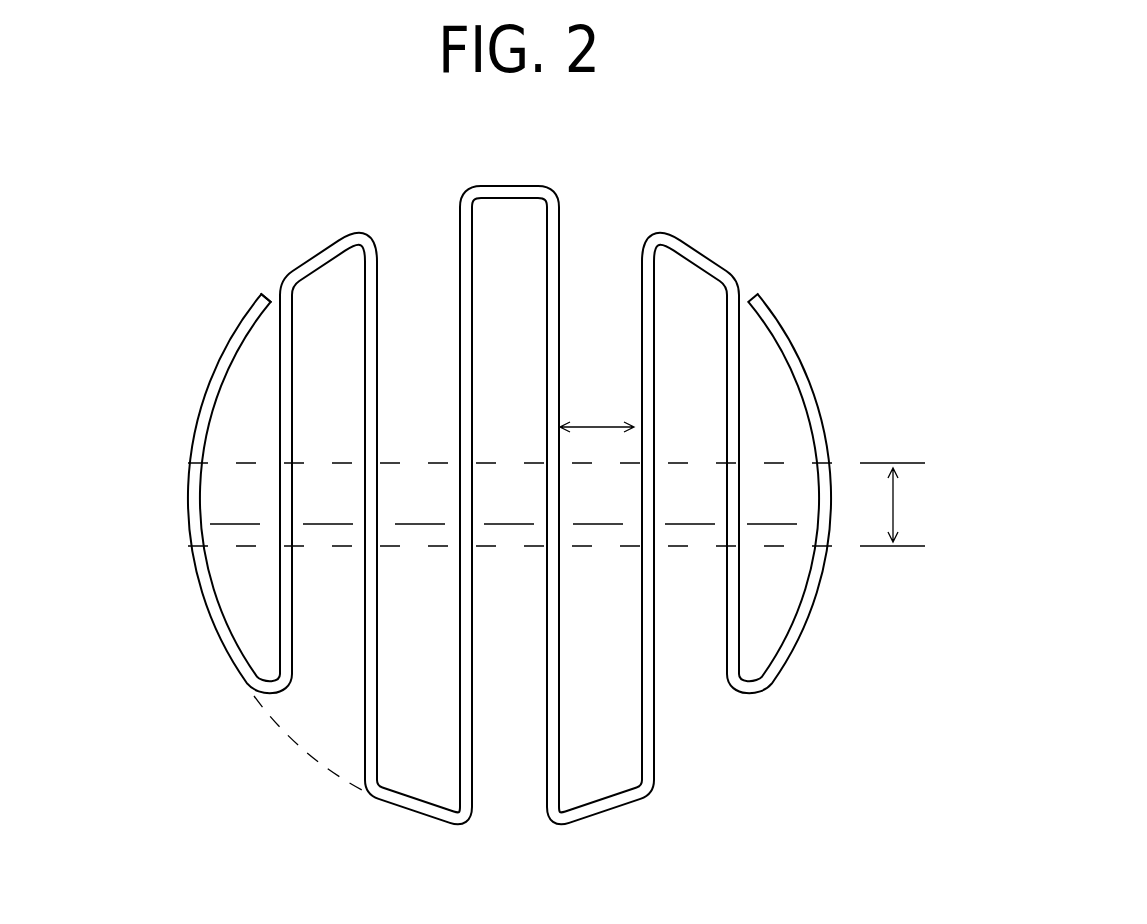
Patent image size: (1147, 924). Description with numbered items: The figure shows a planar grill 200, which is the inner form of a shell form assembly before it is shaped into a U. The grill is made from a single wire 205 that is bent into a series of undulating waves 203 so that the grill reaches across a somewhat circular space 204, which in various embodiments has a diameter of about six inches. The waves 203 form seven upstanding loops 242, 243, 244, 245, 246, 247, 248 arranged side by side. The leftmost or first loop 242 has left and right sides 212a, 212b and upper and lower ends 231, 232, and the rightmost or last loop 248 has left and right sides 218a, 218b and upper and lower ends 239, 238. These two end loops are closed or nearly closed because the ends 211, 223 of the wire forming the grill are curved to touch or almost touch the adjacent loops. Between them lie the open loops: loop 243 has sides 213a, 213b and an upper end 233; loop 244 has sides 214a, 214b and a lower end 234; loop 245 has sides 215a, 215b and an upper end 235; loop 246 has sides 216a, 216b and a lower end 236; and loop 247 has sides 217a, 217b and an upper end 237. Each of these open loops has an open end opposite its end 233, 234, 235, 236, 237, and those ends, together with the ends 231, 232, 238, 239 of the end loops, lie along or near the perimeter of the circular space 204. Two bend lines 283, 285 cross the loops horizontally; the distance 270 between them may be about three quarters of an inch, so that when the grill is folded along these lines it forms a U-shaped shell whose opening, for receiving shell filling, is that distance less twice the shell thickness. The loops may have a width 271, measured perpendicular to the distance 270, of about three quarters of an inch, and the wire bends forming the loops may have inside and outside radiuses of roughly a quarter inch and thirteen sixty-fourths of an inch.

The planar grill 200 is at (861, 110).
The undulating waves 203 is at (586, 203).
The circular space 204 is at (298, 742).
The wire 205 is at (218, 647).
The end of loop 211 is at (262, 292).
The end of loop 223 is at (755, 297).
The upper end of first loop 231 is at (234, 329).
The lower end of first loop 232 is at (282, 696).
The upper end of loop 233 is at (324, 250).
The lower end of loop 234 is at (400, 810).
The upper end of loop 235 is at (512, 185).
The lower end of loop 236 is at (620, 812).
The upper end of loop 237 is at (698, 250).
The lower end of last loop 238 is at (753, 693).
The upper end of last loop 239 is at (772, 312).
The left side of first loop 212a is at (214, 385).
The right side of first loop 212b is at (282, 657).
The left side of loop 213a is at (292, 320).
The right side of loop 213b is at (362, 660).
The left side of loop 214a is at (373, 385).
The right side of loop 214b is at (462, 730).
The left side of loop 215a is at (475, 305).
The right side of loop 215b is at (548, 684).
The left side of loop 216a is at (557, 258).
The right side of loop 216b is at (645, 755).
The left side of loop 217a is at (652, 322).
The right side of loop 217b is at (727, 662).
The left side of last loop 218a is at (740, 447).
The right side of last loop 218b is at (788, 638).
The first loop 242 is at (237, 495).
The loop 243 is at (329, 530).
The loop 244 is at (419, 530).
The loop 245 is at (509, 500).
The loop 246 is at (601, 530).
The loop 247 is at (691, 530).
The last loop 248 is at (779, 495).
The distance between bend lines 270 is at (895, 505).
The loop width 271 is at (598, 420).
The bend line 283 is at (246, 458).
The bend line 285 is at (252, 546).